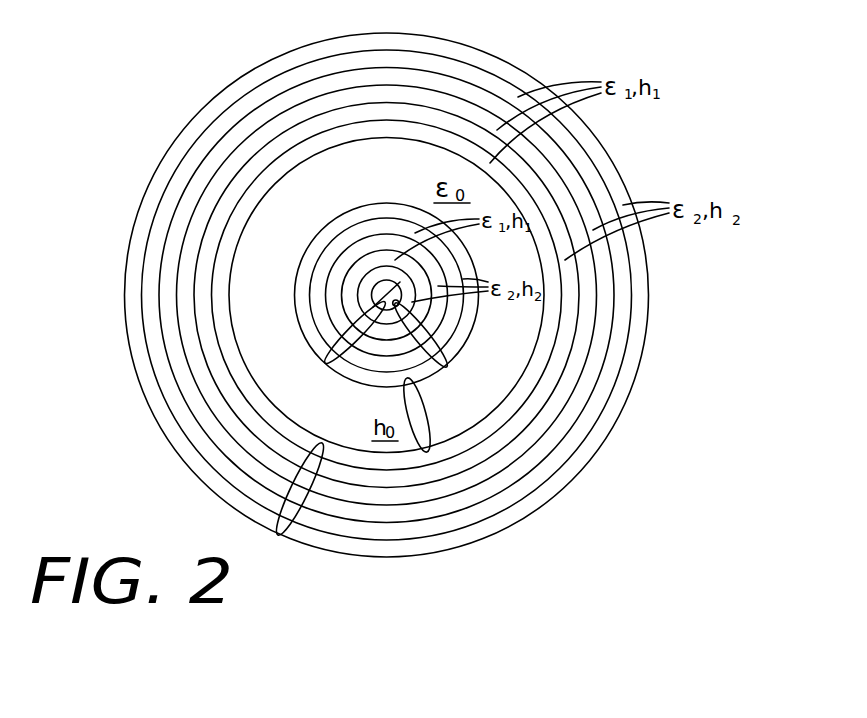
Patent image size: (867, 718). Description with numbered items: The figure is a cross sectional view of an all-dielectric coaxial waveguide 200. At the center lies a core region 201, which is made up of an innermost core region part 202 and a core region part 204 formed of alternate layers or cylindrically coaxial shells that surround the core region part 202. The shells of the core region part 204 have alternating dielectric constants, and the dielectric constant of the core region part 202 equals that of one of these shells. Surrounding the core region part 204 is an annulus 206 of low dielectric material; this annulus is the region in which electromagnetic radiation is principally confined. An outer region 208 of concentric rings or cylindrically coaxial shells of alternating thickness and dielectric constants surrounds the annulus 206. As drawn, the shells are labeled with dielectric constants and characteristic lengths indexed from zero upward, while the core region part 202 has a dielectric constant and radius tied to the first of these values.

The all-dielectric coaxial waveguide 200 is at (240, 50).
The core region 201 is at (358, 298).
The core region part 202 is at (387, 285).
The core region part 204 is at (400, 305).
The annulus 206 is at (427, 412).
The outer region 208 is at (282, 512).